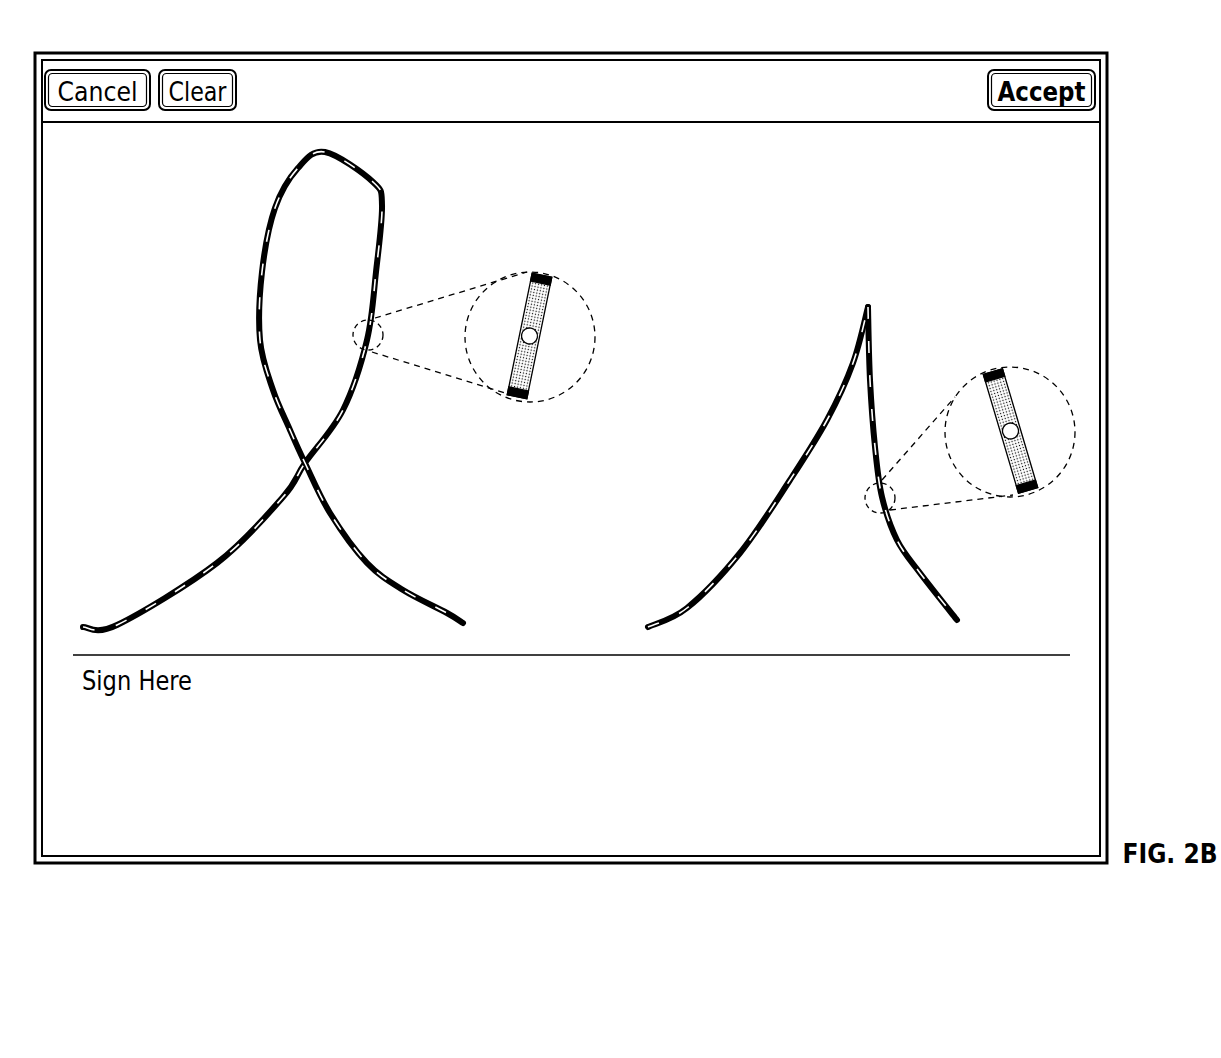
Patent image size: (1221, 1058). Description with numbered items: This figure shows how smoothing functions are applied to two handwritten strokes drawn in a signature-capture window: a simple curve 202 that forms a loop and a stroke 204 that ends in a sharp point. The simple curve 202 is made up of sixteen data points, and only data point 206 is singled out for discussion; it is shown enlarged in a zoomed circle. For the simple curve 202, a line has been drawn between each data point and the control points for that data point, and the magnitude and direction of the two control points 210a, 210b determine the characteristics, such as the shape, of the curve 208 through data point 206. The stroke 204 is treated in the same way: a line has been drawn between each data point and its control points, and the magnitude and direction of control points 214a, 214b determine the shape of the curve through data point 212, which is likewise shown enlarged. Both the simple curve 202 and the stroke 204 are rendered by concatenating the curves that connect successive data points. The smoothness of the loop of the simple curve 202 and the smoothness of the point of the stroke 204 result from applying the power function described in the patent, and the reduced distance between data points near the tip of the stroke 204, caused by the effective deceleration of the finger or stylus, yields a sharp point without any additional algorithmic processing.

The simple curve 202 is at (290, 391).
The stroke that results in a point 204 is at (891, 314).
The data point 206 is at (577, 338).
The curve 208 is at (378, 270).
The control point 210a is at (515, 406).
The control point 210b is at (558, 267).
The data point 212 is at (1018, 422).
The control point 214a is at (984, 365).
The control point 214b is at (1034, 498).